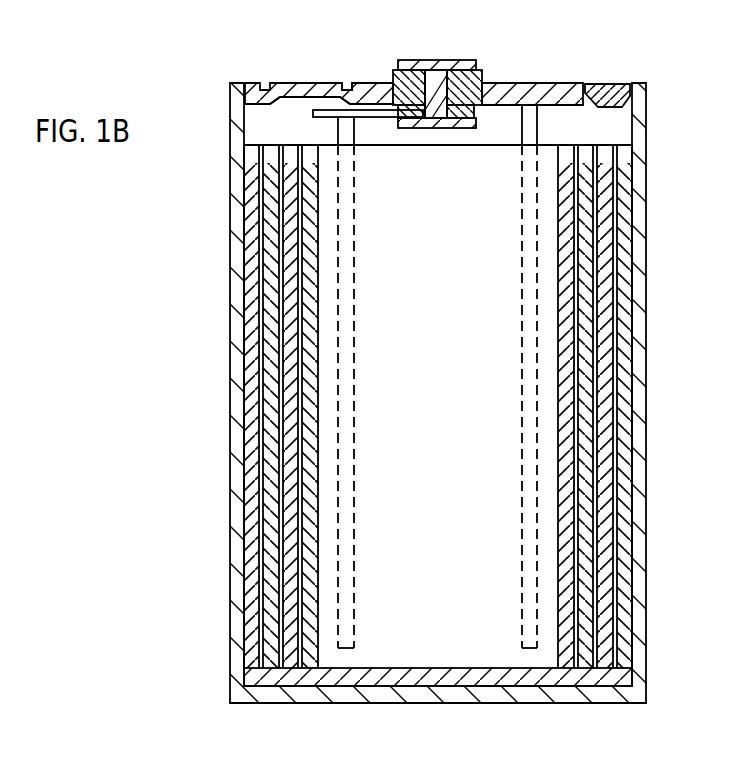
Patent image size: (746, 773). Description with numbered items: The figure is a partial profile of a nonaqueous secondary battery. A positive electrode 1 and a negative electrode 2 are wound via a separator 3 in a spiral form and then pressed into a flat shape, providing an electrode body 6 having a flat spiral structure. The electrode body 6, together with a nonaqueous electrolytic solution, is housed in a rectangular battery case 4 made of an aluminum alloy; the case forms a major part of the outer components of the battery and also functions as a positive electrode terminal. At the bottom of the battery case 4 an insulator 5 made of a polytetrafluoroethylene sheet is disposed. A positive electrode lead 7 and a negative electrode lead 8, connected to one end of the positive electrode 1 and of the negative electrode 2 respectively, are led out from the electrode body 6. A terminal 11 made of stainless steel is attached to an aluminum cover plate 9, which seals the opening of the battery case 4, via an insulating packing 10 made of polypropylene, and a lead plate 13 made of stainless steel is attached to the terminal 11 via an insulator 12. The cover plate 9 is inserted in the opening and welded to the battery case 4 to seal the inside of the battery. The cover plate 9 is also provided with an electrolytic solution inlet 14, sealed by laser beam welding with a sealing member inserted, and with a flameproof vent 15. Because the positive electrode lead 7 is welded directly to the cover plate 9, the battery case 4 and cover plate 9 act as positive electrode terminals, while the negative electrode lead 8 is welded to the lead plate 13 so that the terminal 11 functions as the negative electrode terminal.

The positive electrode 1 is at (252, 347).
The negative electrode 2 is at (272, 428).
The separator 3 is at (262, 388).
The battery case 4 is at (640, 407).
The insulator 5 is at (428, 678).
The electrode body 6 is at (390, 248).
The positive electrode lead 7 is at (530, 127).
The negative electrode lead 8 is at (347, 128).
The cover plate 9 is at (562, 90).
The insulating packing 10 is at (485, 82).
The terminal 11 is at (437, 72).
The insulator 12 is at (382, 88).
The lead plate 13 is at (368, 88).
The electrolytic solution inlet 14 is at (608, 90).
The flameproof vent 15 is at (312, 83).